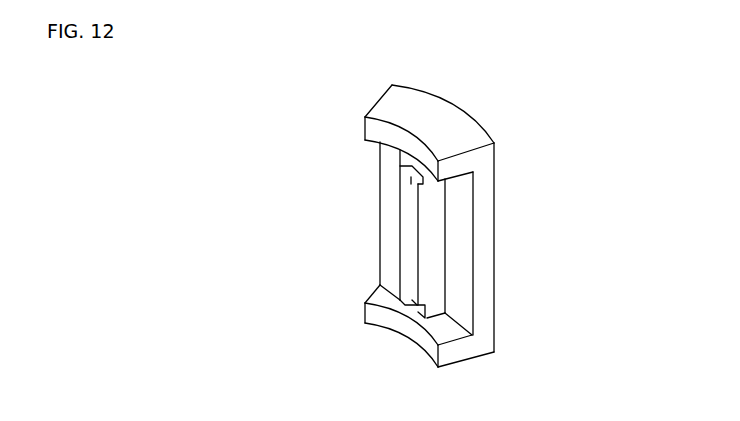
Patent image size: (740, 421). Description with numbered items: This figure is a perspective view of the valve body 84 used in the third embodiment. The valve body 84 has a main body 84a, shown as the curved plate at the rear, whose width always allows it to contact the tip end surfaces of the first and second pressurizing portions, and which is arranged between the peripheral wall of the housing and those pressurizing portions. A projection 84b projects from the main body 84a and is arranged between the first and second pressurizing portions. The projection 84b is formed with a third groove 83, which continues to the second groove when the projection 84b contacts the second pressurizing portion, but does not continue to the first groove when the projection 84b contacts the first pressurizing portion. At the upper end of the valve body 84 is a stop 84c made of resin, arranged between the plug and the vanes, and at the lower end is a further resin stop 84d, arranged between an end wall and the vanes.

The valve body 84 is at (322, 85).
The main body 84a is at (488, 219).
The projection 84b is at (402, 230).
The stop 84c is at (375, 130).
The stop 84d is at (383, 326).
The third groove 83 is at (410, 165).